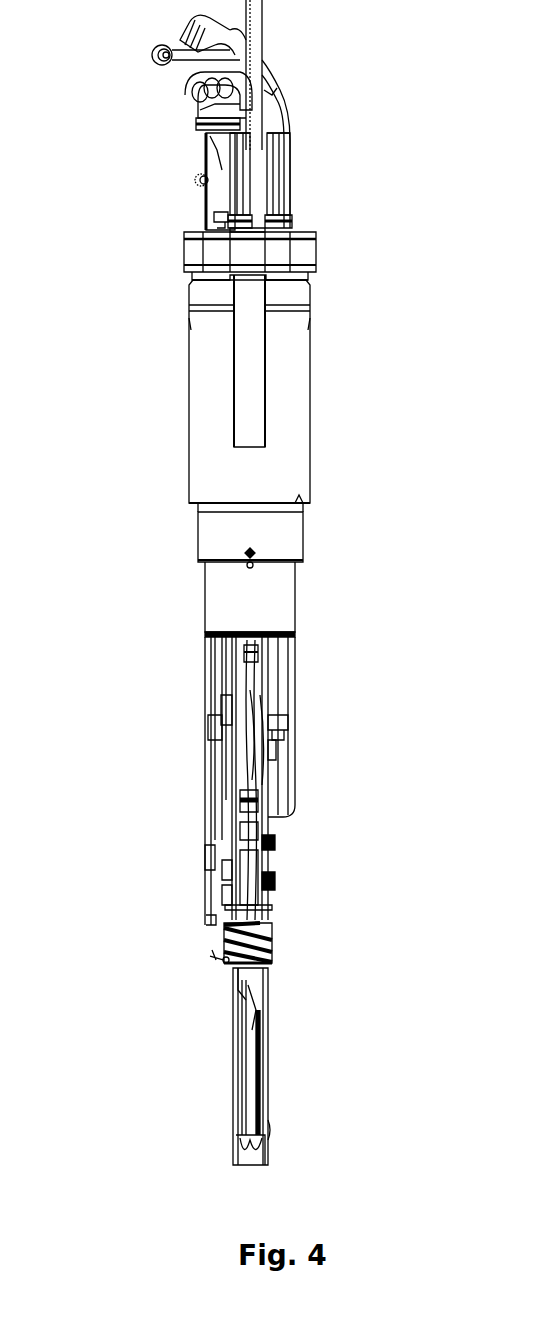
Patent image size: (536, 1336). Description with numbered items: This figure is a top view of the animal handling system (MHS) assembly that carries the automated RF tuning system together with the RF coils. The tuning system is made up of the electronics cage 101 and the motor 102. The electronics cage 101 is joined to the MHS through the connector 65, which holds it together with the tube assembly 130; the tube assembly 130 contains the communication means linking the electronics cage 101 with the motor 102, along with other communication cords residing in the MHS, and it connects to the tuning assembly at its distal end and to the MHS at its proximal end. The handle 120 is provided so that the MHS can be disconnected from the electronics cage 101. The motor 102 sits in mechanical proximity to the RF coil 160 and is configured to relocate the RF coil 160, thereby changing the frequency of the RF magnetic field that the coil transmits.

The tube press assembly 130 is at (221, 114).
The motor 102 is at (206, 165).
The connector 65 is at (190, 256).
The handle 120 is at (253, 360).
The RF tuning electronics cage 101 is at (272, 943).
The RF coil 160 is at (232, 1075).